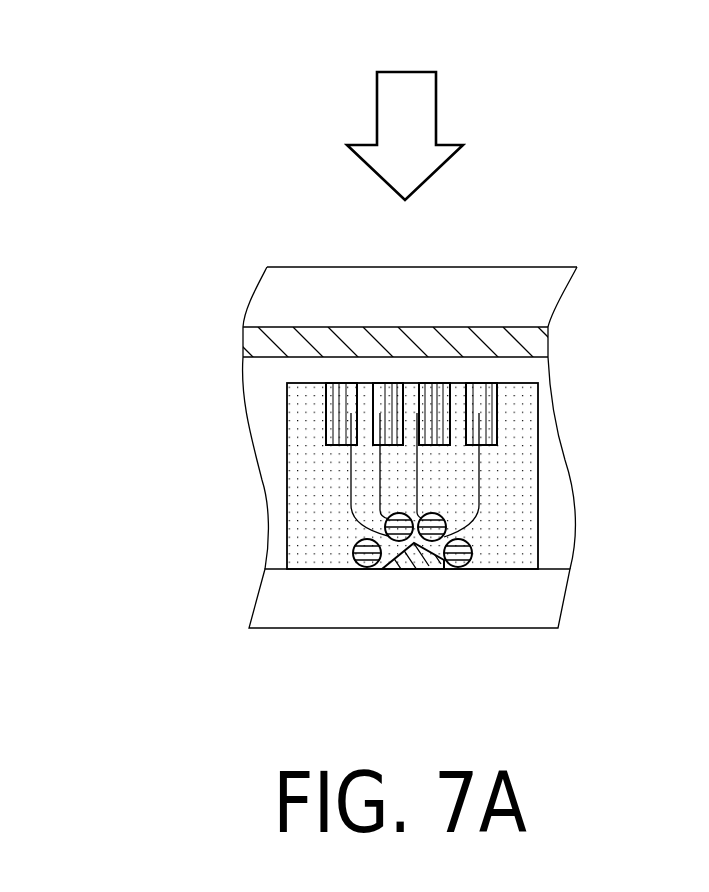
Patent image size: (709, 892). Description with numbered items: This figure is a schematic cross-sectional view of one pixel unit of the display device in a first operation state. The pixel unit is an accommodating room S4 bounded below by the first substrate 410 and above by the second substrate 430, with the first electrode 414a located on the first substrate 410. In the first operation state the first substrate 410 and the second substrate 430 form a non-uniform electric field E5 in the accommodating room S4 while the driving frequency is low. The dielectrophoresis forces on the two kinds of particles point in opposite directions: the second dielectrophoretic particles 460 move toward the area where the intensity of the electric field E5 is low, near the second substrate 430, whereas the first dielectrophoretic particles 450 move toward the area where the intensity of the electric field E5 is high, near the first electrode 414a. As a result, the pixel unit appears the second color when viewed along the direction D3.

The viewing direction D3 is at (436, 103).
The second substrate 430 is at (240, 290).
The first substrate 410 is at (242, 592).
The accommodating room S4 is at (512, 410).
The second dielectrophoretic particles 460 is at (342, 397).
The non-uniform electric field E5 is at (479, 488).
The first dielectrophoretic particles 450 is at (363, 562).
The first electrode 414a is at (413, 563).